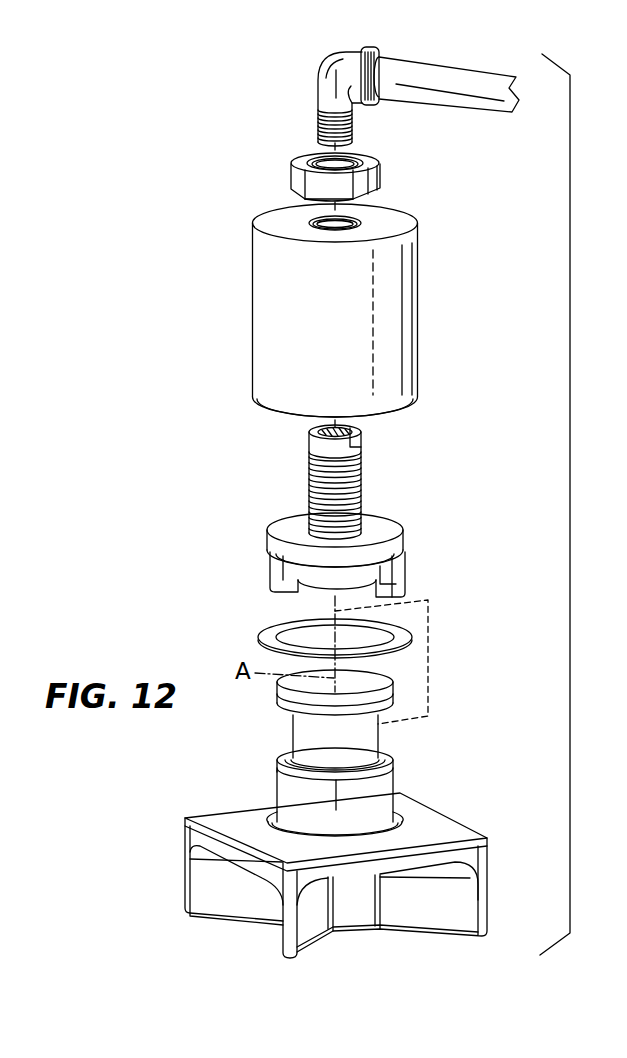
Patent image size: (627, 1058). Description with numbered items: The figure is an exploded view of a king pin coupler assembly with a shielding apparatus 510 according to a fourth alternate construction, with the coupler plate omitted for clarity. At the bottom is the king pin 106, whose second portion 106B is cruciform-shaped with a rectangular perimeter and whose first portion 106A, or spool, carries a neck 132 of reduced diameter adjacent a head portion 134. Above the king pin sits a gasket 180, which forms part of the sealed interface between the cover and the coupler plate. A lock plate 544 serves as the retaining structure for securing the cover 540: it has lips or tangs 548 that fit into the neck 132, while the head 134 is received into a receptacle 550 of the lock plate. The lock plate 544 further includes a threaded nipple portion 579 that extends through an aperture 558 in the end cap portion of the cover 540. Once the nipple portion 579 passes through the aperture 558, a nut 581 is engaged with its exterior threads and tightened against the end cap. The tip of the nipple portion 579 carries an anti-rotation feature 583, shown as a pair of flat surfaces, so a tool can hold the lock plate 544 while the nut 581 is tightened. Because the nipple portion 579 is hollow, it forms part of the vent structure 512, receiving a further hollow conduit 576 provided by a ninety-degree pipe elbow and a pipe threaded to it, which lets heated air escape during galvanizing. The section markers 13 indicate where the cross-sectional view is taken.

The shielding apparatus 510 is at (581, 504).
The vent structure 512 is at (266, 120).
The section line 13 is at (324, 90).
The hollow conduit 576 is at (353, 96).
The nut 581 is at (383, 181).
The aperture 558 is at (312, 217).
The cover 540 is at (300, 295).
The anti-rotation feature 583 is at (310, 445).
The threaded nipple portion 579 is at (325, 460).
The lock plate 544 is at (327, 489).
The receptacle 550 is at (284, 566).
The tangs 548 is at (282, 582).
The gasket 180 is at (270, 634).
The head portion 134 is at (393, 695).
The neck 132 is at (378, 742).
The king pin 106 is at (265, 864).
The first portion 106A is at (277, 770).
The second portion 106B is at (203, 836).